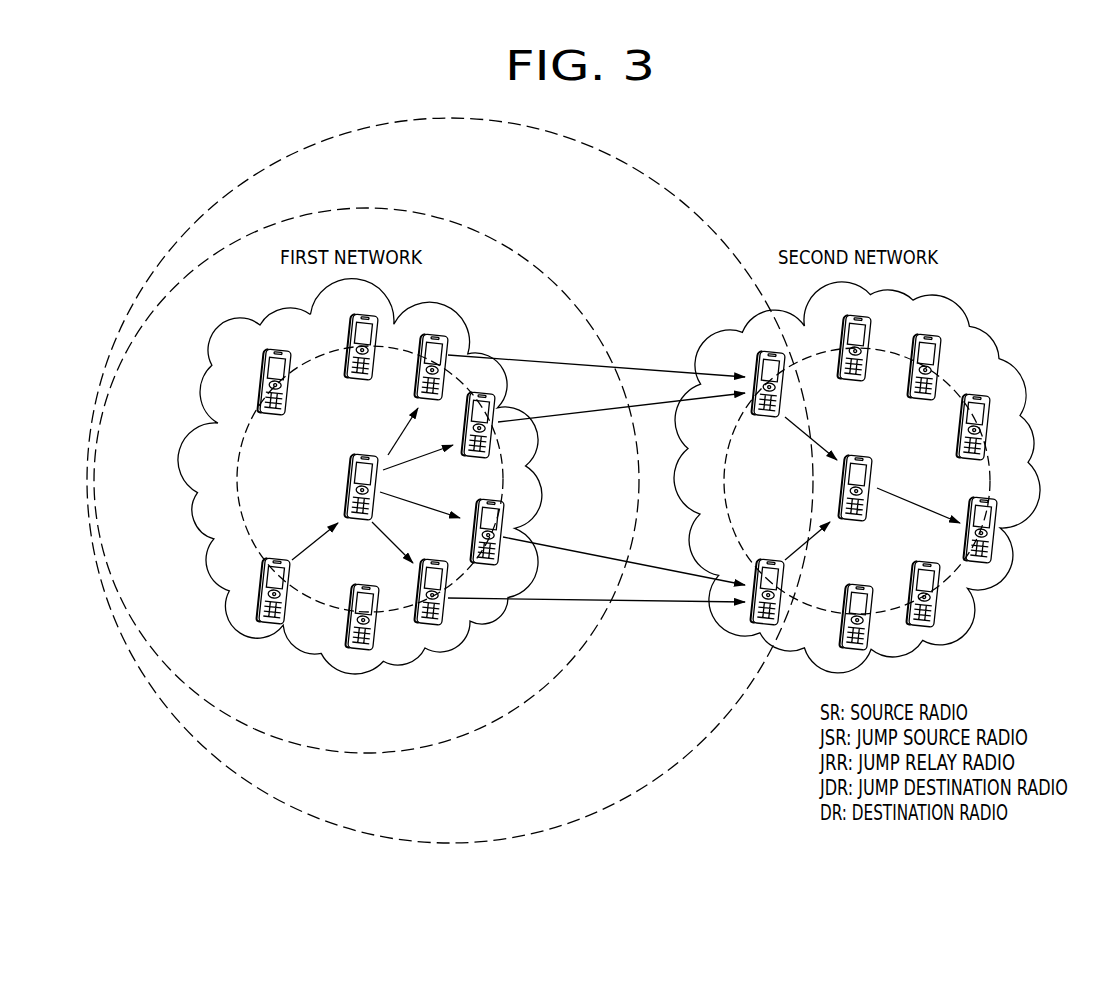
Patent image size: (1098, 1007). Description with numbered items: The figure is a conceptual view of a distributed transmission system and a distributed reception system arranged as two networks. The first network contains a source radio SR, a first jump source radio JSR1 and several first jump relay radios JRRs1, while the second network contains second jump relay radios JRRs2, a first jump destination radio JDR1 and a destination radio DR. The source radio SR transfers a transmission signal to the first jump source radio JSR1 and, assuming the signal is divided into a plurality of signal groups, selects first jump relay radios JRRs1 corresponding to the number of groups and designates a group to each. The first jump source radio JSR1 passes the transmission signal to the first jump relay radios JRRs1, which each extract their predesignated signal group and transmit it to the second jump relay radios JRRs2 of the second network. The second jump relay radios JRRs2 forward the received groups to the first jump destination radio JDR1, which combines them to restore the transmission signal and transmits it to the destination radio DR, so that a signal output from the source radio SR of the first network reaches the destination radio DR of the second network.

The source radio SR is at (273, 578).
The first jump source radio JSR1 is at (367, 475).
The first jump relay radios JRRs1 is at (462, 468).
The second jump relay radios JRRs2 is at (769, 475).
The first jump destination radio JDR1 is at (861, 476).
The destination radio DR is at (980, 518).